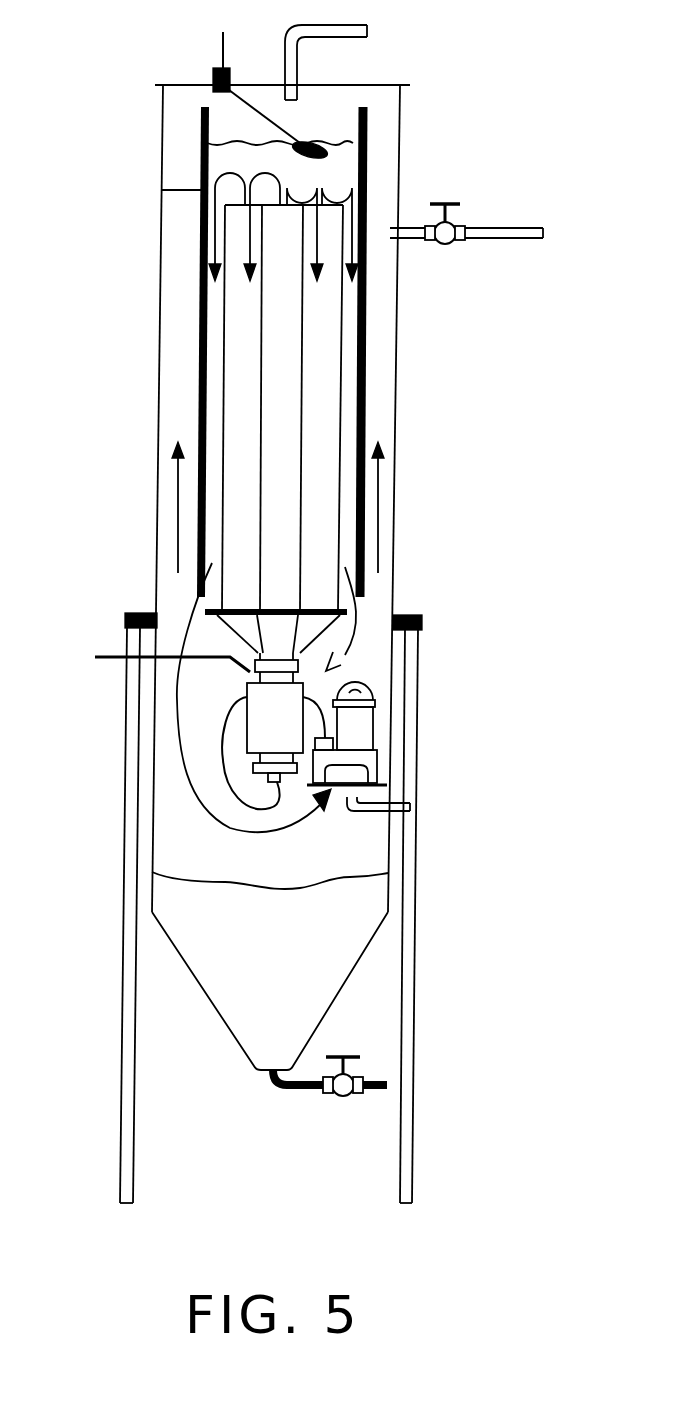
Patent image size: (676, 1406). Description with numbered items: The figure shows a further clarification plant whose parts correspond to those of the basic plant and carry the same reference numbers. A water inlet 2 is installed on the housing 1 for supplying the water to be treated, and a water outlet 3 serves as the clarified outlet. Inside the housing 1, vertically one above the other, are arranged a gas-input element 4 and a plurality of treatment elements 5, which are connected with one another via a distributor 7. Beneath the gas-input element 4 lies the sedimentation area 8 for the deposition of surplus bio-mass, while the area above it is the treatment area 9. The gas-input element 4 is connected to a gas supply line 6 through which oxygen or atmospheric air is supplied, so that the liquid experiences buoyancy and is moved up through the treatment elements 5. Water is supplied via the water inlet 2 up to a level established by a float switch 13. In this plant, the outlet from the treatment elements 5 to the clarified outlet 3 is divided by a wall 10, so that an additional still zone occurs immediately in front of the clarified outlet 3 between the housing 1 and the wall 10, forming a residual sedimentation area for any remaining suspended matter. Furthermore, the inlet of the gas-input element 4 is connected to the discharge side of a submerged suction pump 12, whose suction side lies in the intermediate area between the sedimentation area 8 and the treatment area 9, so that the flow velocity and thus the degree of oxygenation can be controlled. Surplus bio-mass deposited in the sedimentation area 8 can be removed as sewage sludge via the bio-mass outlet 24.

The housing 1 is at (397, 448).
The water inlet 2 is at (413, 807).
The water outlet 3 is at (543, 236).
The gas-input element 4 is at (270, 715).
The treatment elements 5 is at (243, 350).
The gas supply line 6 is at (108, 655).
The distributor 7 is at (238, 632).
The sedimentation area 8 is at (313, 973).
The treatment area 9 is at (375, 645).
The wall 10 is at (362, 358).
The suction pump 12 is at (357, 727).
The float switch 13 is at (215, 72).
The bio-mass outlet 24 is at (293, 1095).